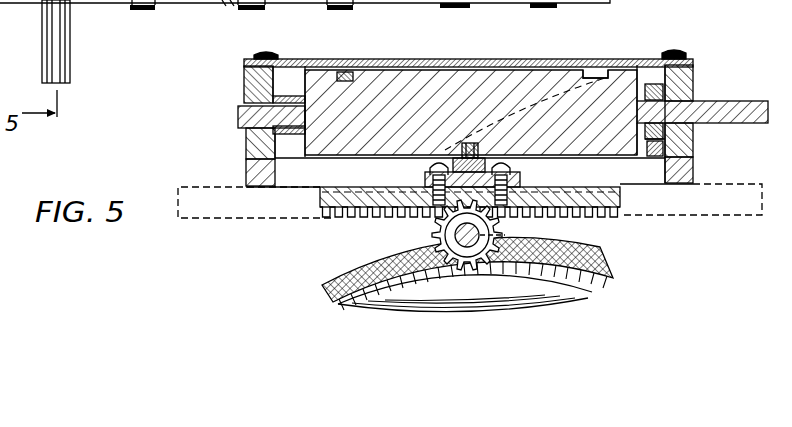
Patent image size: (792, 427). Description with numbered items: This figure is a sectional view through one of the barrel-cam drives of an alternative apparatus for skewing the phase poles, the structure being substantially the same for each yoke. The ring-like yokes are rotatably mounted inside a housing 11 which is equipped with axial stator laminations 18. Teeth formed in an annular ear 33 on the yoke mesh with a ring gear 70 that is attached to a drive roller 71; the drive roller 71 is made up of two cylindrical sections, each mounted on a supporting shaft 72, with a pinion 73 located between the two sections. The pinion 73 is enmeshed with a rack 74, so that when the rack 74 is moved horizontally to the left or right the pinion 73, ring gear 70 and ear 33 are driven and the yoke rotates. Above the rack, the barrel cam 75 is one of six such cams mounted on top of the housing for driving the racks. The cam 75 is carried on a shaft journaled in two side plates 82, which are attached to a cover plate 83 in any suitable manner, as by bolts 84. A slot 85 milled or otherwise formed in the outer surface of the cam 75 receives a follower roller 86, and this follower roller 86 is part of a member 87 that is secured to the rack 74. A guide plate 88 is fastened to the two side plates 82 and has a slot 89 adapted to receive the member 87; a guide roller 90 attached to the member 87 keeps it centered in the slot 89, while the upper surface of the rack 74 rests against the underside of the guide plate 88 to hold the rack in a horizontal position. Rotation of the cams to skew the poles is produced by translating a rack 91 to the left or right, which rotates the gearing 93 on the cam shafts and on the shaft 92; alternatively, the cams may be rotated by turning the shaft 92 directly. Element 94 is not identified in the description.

The housing 11 is at (388, 238).
The axial stator laminations 18 is at (600, 268).
The annular ear 33 is at (570, 303).
The ring gear 70 is at (521, 226).
The drive roller 71 is at (508, 238).
The supporting shaft 72 is at (462, 235).
The pinion 73 is at (437, 215).
The rack 74 is at (336, 212).
The barrel cam 75 is at (309, 70).
The side plates 82 is at (244, 80).
The cover plate 83 is at (254, 59).
The bolts 84 is at (268, 53).
The slot 85 is at (598, 78).
The follower roller 86 is at (460, 152).
The member 87 is at (521, 182).
The guide plate 88 is at (246, 169).
The slot 89 is at (293, 180).
The guide roller 90 is at (486, 160).
The rack 91 is at (666, 152).
The shaft 92 is at (70, 48).
The gearing 93 is at (215, 0).
The plate 94 is at (18, 4).